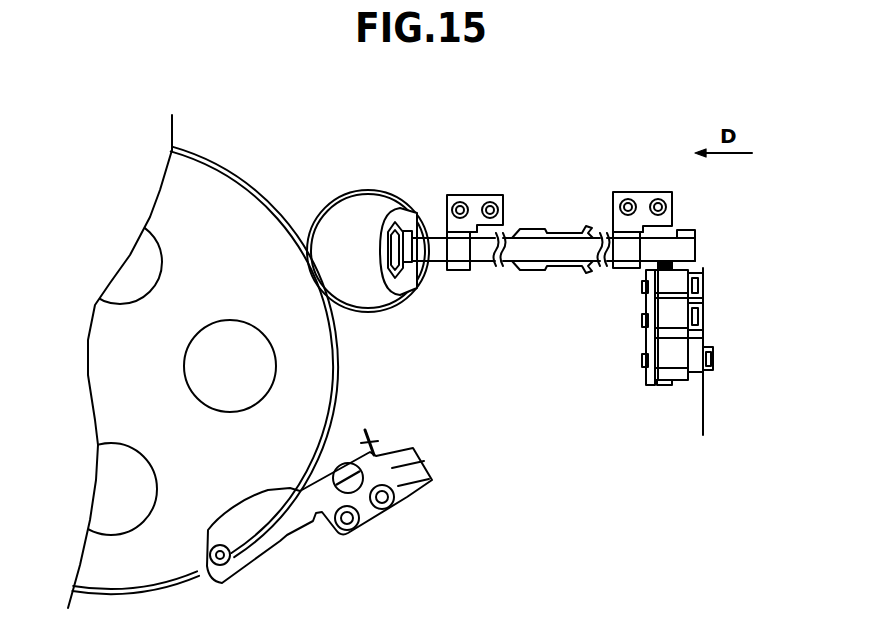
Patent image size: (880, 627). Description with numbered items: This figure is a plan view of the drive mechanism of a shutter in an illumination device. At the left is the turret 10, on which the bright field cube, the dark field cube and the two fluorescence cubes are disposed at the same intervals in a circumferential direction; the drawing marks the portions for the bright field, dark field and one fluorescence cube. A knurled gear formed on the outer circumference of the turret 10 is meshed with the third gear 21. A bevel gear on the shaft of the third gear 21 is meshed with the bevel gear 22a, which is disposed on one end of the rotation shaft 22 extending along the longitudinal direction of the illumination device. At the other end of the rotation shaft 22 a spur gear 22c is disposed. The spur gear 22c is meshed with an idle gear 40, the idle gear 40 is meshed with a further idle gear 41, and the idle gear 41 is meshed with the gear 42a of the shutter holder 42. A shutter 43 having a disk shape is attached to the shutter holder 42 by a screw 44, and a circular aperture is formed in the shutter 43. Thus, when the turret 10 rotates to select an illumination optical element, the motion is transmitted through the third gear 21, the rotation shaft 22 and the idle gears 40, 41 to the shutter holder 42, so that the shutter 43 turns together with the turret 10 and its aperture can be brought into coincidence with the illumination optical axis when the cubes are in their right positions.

The turret 10 is at (198, 178).
The third gear 21 is at (365, 209).
The bevel gear 22a is at (394, 224).
The rotation shaft 22 is at (512, 230).
The spur gear 22c is at (667, 227).
The idle gear 40 is at (663, 277).
The idle gear 41 is at (683, 332).
The screw 44 is at (710, 365).
The gear of the shutter holder 42a is at (662, 380).
The shutter holder 42 is at (678, 380).
The shutter 43 is at (703, 418).